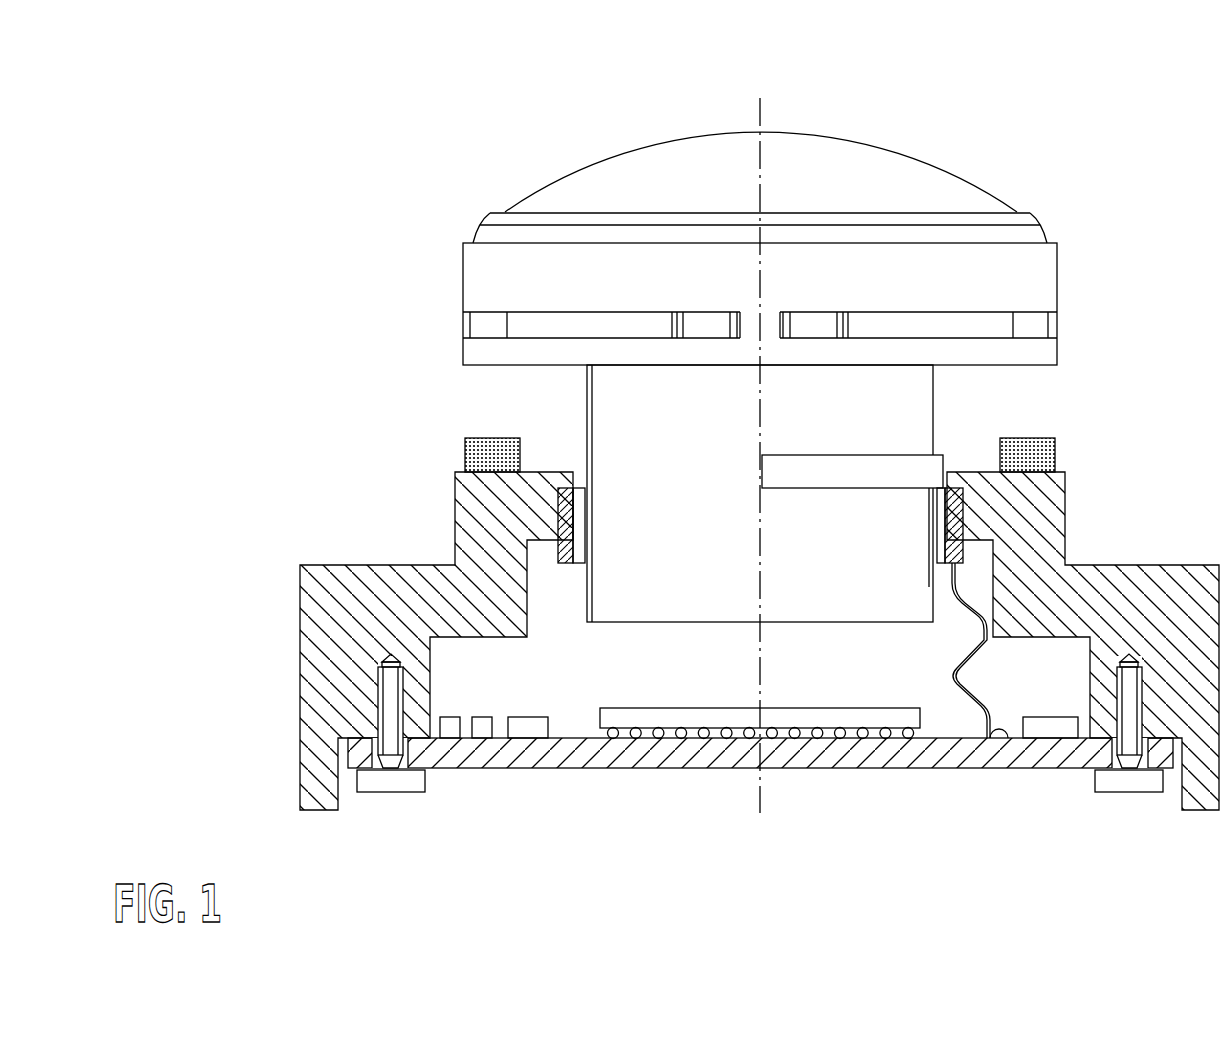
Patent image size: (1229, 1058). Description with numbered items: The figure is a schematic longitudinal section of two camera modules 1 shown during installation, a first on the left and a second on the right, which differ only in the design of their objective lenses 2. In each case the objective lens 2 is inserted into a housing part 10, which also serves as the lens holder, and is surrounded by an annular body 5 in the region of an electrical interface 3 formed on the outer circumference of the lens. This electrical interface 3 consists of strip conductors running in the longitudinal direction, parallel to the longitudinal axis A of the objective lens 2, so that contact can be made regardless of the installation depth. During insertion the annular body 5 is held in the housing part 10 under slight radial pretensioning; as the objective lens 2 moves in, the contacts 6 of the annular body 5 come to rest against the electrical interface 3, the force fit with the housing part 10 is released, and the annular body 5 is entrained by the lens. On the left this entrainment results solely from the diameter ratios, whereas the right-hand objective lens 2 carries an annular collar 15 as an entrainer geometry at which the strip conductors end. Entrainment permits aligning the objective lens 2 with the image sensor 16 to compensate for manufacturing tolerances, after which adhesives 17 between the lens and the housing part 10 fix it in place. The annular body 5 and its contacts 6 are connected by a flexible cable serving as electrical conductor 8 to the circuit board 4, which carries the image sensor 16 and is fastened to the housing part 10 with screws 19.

The camera module 1 is at (978, 125).
The objective lens 2 is at (684, 168).
The longitudinal axis A is at (762, 117).
The electrical interface 3 is at (587, 402).
The circuit board 4 is at (592, 752).
The annular body 5 is at (558, 522).
The contacts 6 is at (580, 503).
The electrical conductor 8 is at (1008, 733).
The housing part 10 is at (1023, 548).
The annular collar 15 is at (898, 470).
The image sensor 16 is at (830, 718).
The adhesives 17 is at (465, 452).
The screws 19 is at (390, 780).